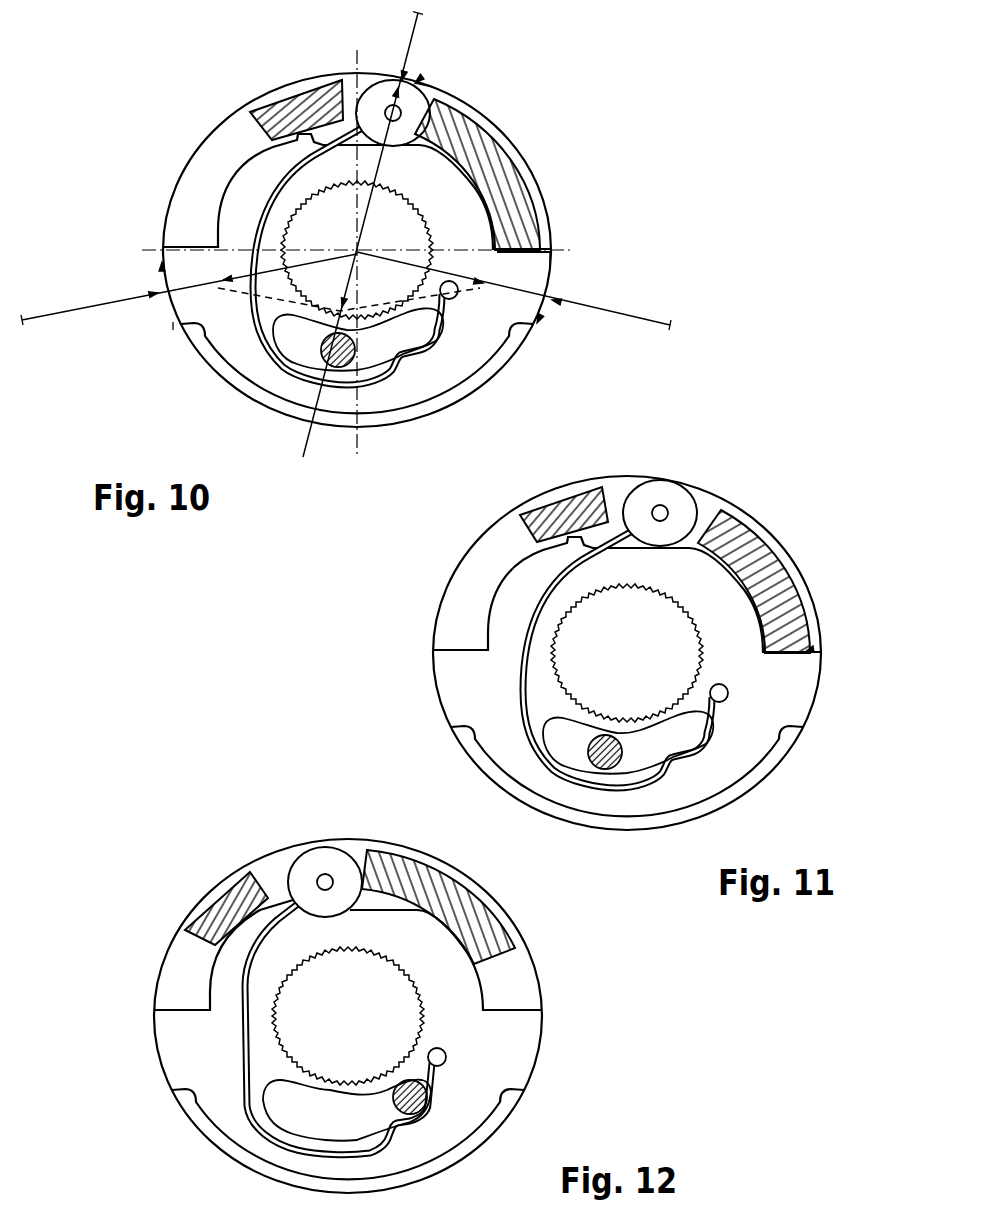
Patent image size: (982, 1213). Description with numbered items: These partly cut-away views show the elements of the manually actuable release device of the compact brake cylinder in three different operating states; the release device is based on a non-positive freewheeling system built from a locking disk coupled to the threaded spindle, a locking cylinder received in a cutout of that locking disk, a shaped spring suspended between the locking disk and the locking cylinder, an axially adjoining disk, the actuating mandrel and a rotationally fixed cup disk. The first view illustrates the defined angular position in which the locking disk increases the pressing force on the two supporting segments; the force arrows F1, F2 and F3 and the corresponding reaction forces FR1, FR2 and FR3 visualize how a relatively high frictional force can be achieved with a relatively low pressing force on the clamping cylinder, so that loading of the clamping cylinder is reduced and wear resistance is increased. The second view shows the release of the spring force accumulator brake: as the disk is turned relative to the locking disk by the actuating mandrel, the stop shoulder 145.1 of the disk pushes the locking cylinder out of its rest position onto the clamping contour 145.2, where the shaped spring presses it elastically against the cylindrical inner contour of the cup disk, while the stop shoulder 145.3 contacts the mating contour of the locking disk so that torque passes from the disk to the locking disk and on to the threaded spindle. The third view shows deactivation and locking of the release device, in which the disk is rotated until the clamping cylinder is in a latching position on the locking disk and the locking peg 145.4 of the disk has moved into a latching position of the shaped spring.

In FIG. 10, the spring force F1 is at (411, 38).
In FIG. 10, the second force F2 is at (440, 268).
In FIG. 10, the third force F3 is at (98, 304).
In FIG. 10, the first reaction force FR1 is at (422, 80).
In FIG. 10, the second reaction force FR2 is at (552, 283).
In FIG. 10, the third reaction force FR3 is at (173, 307).
In FIG. 11, the stop shoulder 145.1 is at (605, 484).
In FIG. 11, the clamping contour 145.2 is at (721, 509).
In FIG. 11, the stop shoulder 145.3 is at (812, 652).
In FIG. 12, the locking peg 145.4 is at (430, 1092).